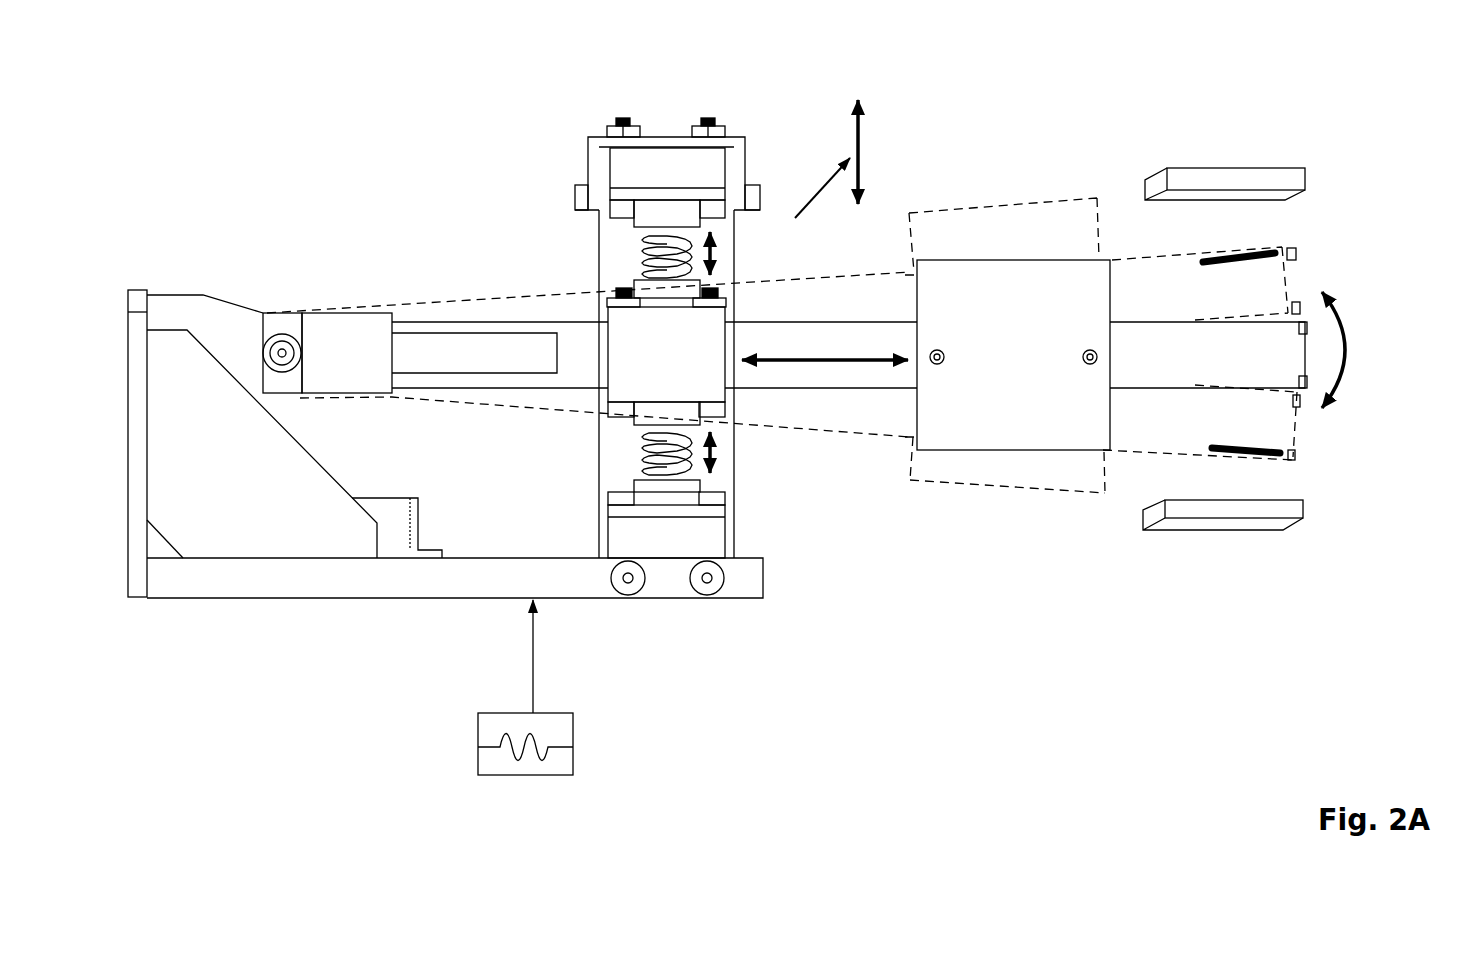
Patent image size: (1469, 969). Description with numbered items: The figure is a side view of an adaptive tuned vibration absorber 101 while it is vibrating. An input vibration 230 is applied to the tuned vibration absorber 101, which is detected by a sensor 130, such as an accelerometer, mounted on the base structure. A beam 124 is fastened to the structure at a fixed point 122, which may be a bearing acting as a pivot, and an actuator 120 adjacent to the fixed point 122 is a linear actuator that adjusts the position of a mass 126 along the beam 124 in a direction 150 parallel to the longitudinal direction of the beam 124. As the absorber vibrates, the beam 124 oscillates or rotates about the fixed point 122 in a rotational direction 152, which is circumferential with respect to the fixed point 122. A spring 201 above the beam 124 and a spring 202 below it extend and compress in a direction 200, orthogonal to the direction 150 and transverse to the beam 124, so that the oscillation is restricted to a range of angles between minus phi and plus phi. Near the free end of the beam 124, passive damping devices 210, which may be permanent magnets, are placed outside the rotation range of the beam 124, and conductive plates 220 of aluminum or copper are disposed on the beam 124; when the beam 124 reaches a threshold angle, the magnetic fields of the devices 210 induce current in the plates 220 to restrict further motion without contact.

The tuned vibration absorber 101 is at (786, 428).
The actuator 120 is at (342, 346).
The fixed point 122 is at (283, 332).
The beam 124 is at (1182, 423).
The mass 126 is at (1060, 358).
The sensor 130 is at (402, 532).
The direction 150 is at (825, 359).
The rotational direction 152 is at (1383, 349).
The direction 200 is at (770, 460).
The spring 201 is at (640, 252).
The spring 202 is at (640, 453).
The passive damping device 210 is at (1218, 167).
The plate 220 is at (1268, 247).
The input vibration 230 is at (478, 728).